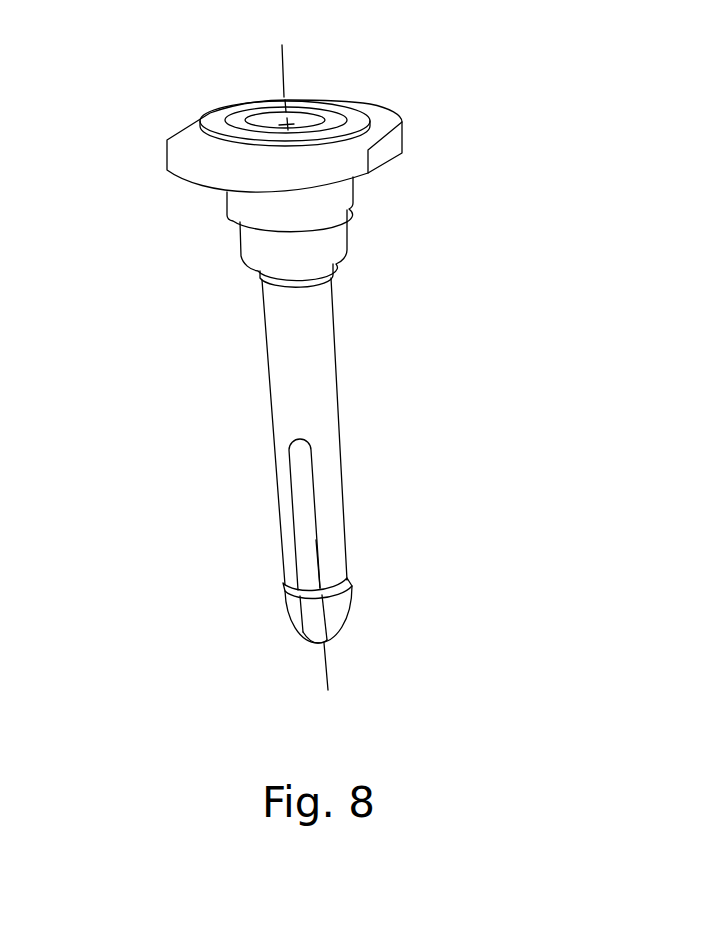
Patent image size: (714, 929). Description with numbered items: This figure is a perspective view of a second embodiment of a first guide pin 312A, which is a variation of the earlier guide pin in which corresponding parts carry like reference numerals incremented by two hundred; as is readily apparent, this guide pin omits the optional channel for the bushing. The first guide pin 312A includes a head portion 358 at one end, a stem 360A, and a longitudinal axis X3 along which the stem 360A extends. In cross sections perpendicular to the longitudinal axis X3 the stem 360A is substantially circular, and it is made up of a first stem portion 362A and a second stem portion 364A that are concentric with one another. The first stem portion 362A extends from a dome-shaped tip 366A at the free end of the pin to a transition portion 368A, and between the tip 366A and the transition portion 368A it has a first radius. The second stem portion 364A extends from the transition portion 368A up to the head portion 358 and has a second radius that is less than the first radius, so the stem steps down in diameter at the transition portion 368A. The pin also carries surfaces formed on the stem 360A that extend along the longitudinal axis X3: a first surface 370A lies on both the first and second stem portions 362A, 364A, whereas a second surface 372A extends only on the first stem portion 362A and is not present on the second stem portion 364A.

The longitudinal axis X3 is at (283, 77).
The head portion 358 is at (222, 207).
The first guide pin 312A is at (317, 396).
The stem 360A is at (375, 437).
The second stem portion 364A is at (277, 523).
The transition portion 368A is at (283, 585).
The first stem portion 362A is at (339, 637).
The first surface 370A is at (310, 563).
The second surface 372A is at (348, 600).
The dome-shaped tip 366A is at (305, 642).